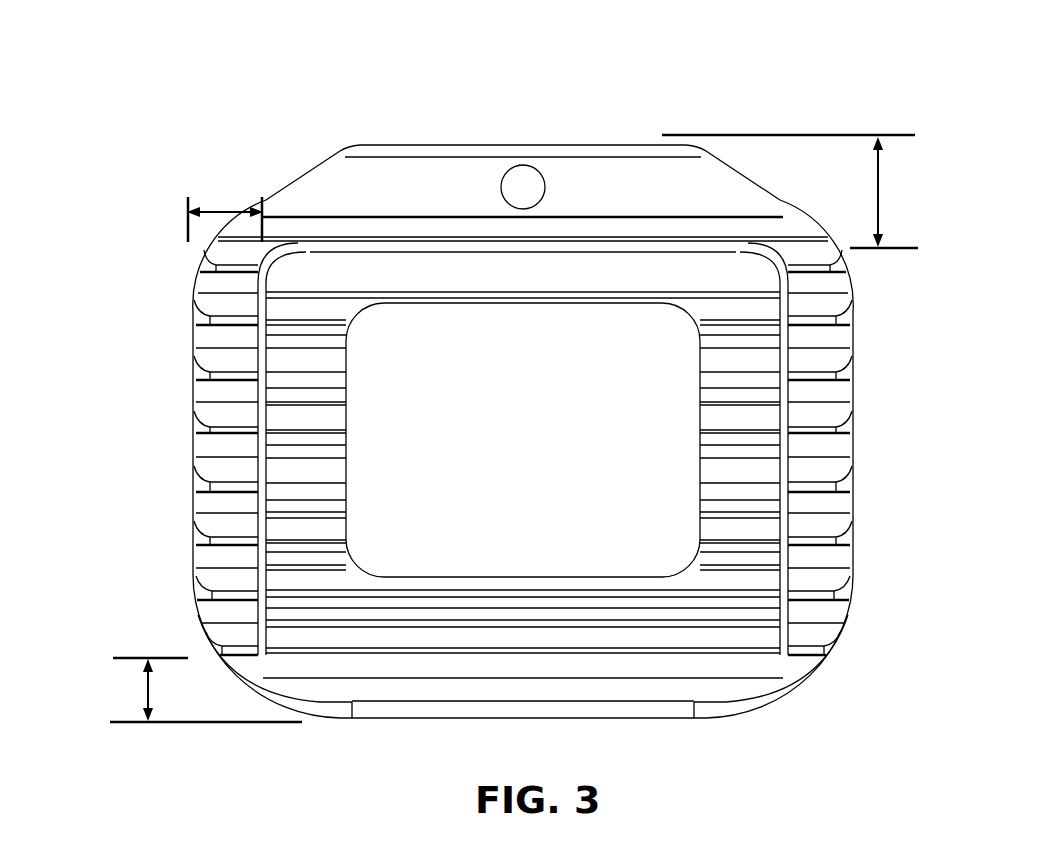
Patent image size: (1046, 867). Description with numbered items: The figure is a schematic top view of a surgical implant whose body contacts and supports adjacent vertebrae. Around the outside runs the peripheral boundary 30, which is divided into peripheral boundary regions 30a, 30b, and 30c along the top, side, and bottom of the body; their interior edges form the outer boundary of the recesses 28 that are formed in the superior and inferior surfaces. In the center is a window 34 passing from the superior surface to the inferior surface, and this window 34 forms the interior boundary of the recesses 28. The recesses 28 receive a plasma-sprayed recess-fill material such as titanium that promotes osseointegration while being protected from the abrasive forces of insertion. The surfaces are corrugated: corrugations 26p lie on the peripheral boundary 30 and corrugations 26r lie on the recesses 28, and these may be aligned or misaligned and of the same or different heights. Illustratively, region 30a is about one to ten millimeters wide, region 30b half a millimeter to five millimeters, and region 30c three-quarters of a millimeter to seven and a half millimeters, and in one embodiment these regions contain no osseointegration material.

The peripheral boundary 30 is at (594, 188).
The recesses 28 is at (402, 263).
The corrugations on the peripheral boundary 26p is at (207, 373).
The corrugations on the recesses 26r is at (283, 427).
The window 34 is at (536, 444).
The peripheral boundary region 30a is at (812, 191).
The peripheral boundary region 30b is at (225, 190).
The peripheral boundary region 30c is at (172, 690).